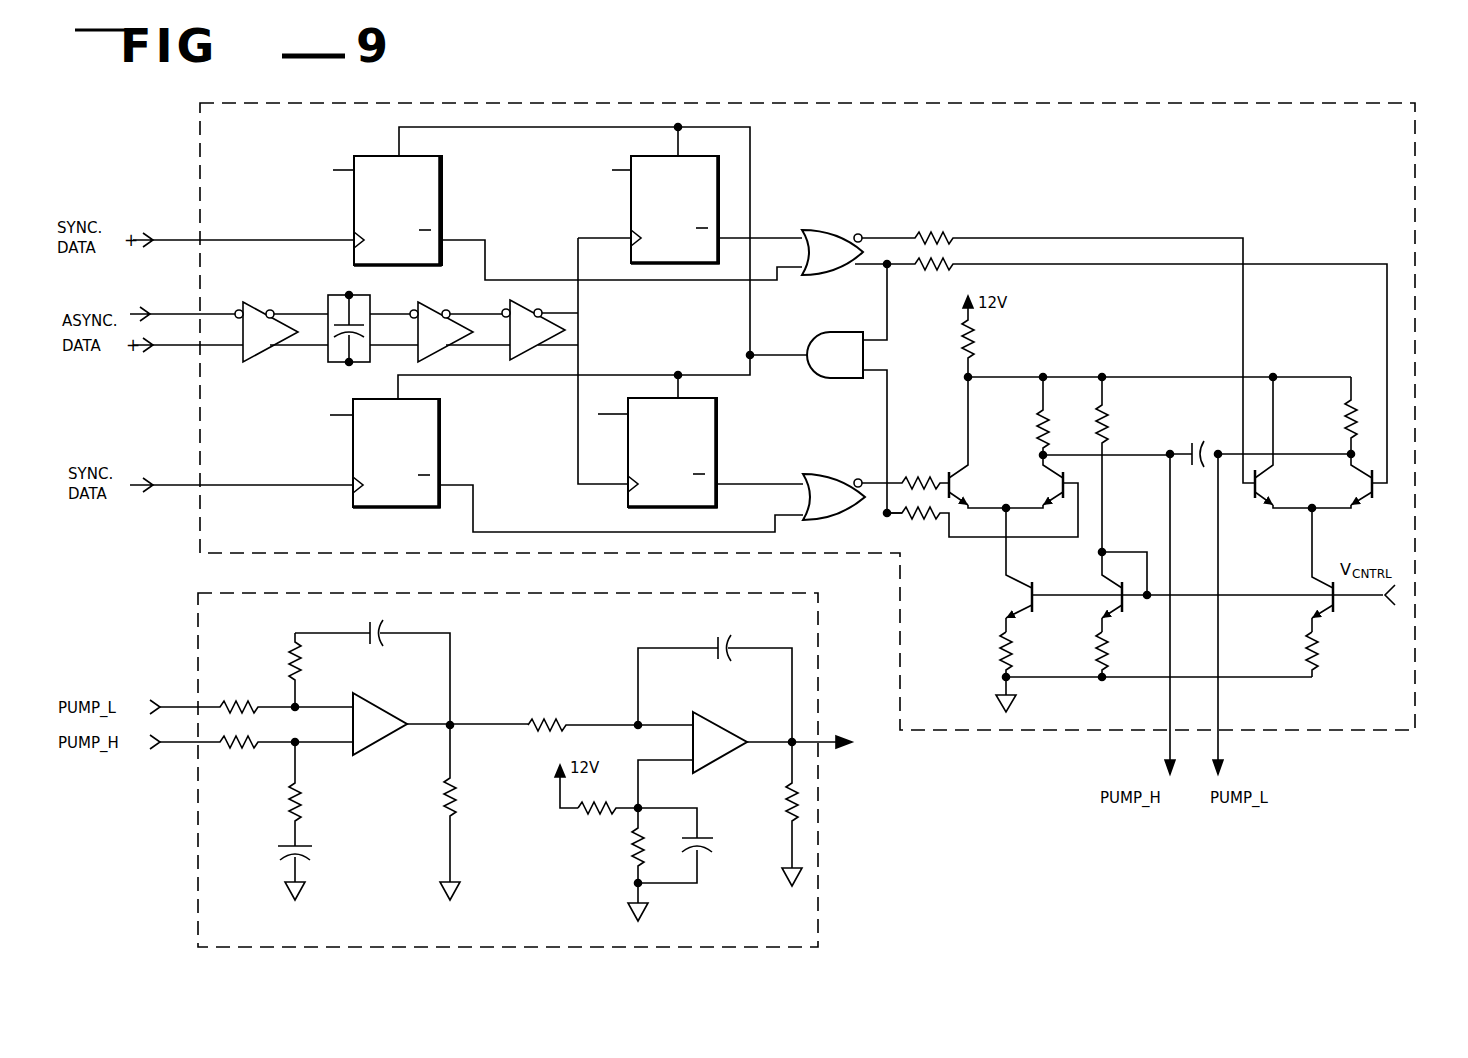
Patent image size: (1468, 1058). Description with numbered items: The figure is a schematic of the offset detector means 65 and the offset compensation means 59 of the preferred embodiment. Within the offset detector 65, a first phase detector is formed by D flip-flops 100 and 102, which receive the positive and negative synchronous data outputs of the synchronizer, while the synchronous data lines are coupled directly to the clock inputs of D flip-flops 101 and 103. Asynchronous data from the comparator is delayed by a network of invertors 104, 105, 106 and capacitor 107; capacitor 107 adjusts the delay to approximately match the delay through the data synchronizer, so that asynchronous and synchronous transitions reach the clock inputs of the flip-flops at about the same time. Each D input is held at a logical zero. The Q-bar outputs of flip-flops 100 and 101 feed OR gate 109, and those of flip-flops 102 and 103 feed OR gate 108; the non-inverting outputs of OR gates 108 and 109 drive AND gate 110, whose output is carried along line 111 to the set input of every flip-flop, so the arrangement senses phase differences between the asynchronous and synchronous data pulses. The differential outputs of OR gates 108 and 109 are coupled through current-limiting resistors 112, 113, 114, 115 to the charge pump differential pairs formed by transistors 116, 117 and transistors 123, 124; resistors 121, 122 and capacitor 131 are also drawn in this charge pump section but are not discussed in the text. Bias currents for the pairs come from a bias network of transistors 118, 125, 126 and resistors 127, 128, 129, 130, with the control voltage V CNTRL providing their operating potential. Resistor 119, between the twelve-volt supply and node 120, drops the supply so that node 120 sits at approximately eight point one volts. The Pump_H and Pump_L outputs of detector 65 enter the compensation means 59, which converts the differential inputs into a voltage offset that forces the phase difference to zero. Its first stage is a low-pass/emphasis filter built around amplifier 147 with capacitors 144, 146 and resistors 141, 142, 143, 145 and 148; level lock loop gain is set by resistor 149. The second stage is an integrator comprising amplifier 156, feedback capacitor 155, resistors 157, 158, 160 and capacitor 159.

The offset detector means 65 is at (198, 102).
The offset compensation means 59 is at (196, 597).
The D flip-flop 100 is at (387, 154).
The D flip-flop 101 is at (630, 206).
The D flip-flop 102 is at (352, 448).
The D flip-flop 103 is at (718, 424).
The invertor 104 is at (262, 306).
The invertor 105 is at (439, 309).
The invertor 106 is at (525, 306).
The capacitor 107 is at (332, 342).
The OR gate 108 is at (848, 507).
The OR gate 109 is at (848, 262).
The AND gate 110 is at (850, 365).
The line 111 is at (772, 354).
The resistor 112 is at (926, 232).
The resistor 113 is at (951, 270).
The resistor 114 is at (917, 478).
The resistor 115 is at (903, 518).
The transistor 116 is at (961, 478).
The transistor 117 is at (1048, 482).
The transistor 118 is at (1018, 590).
The resistor 119 is at (976, 347).
The node 120 is at (1045, 375).
The resistor 121 is at (1043, 432).
The resistor 122 is at (1345, 424).
The transistor 123 is at (1268, 484).
The transistor 124 is at (1357, 483).
The transistor 125 is at (1318, 584).
The transistor 126 is at (1100, 584).
The resistor 127 is at (1108, 412).
The resistor 128 is at (1000, 650).
The resistor 129 is at (1106, 655).
The resistor 130 is at (1305, 655).
The capacitor 131 is at (1200, 434).
The resistor 141 is at (250, 696).
The resistor 142 is at (233, 746).
The resistor 143 is at (300, 665).
The capacitor 144 is at (383, 618).
The resistor 145 is at (305, 796).
The capacitor 146 is at (315, 849).
The amplifier 147 is at (390, 710).
The resistor 148 is at (460, 799).
The resistor 149 is at (554, 716).
The feedback capacitor 155 is at (724, 626).
The amplifier 156 is at (712, 712).
The resistor 157 is at (592, 782).
The resistor 158 is at (628, 849).
The capacitor 159 is at (717, 840).
The resistor 160 is at (785, 801).